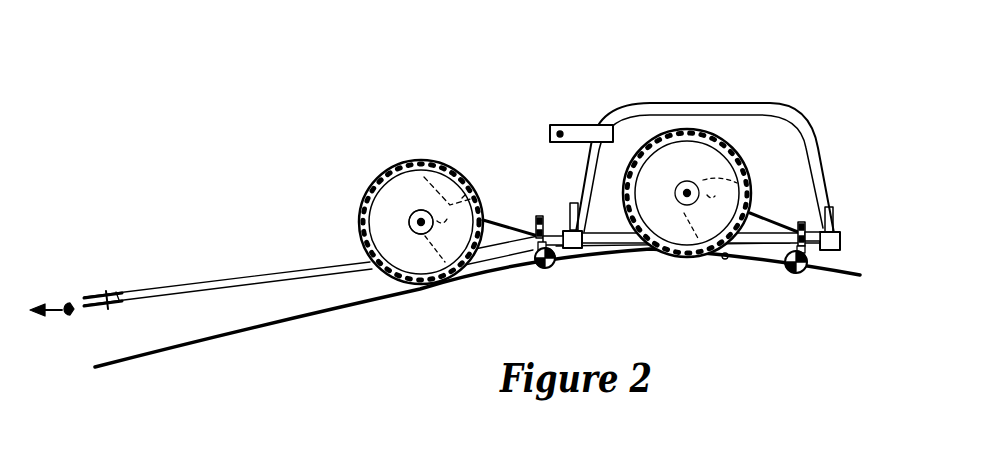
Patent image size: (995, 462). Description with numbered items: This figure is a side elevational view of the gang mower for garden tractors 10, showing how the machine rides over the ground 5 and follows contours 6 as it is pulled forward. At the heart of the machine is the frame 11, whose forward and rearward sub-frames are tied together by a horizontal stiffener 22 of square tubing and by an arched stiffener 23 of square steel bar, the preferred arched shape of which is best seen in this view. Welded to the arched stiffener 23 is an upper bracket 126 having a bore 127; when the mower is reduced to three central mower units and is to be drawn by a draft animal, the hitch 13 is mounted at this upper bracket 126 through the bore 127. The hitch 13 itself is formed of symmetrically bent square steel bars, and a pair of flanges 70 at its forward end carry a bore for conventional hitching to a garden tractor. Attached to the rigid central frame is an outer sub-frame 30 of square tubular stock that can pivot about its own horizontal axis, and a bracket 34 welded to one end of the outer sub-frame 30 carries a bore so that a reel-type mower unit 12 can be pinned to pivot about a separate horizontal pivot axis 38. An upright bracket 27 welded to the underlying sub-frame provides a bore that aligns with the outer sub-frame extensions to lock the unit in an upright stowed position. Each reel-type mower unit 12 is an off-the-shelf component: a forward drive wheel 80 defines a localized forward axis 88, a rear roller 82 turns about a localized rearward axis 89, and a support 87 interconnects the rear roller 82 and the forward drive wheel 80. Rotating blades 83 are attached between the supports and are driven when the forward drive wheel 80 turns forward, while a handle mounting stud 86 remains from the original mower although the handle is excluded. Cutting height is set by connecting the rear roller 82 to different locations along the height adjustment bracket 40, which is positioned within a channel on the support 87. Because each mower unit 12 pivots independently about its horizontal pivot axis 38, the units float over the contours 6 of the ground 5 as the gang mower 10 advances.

The ground 5 is at (113, 358).
The contours 6 is at (728, 266).
The gang mower for garden tractors 10 is at (452, 77).
The frame 11 is at (619, 99).
The reel-type mower unit 12 is at (374, 168).
The hitch 13 is at (212, 276).
The horizontal stiffener 22 is at (605, 252).
The arched stiffener 23 is at (808, 133).
The upright bracket 27 is at (574, 203).
The outer sub-frame 30 is at (841, 244).
The bracket 34 is at (573, 247).
The horizontal pivot axis 38 is at (541, 238).
The height adjustment bracket 40 is at (537, 218).
The flange 70 is at (98, 296).
The forward drive wheel 80 is at (393, 275).
The rear roller 82 is at (526, 270).
The rotating blades 83 is at (418, 158).
The handle mounting stud 86 is at (463, 168).
The support 87 is at (495, 262).
The localized forward axis 88 is at (414, 226).
The localized rearward axis 89 is at (545, 268).
The upper bracket 126 is at (580, 124).
The bore 127 is at (560, 131).